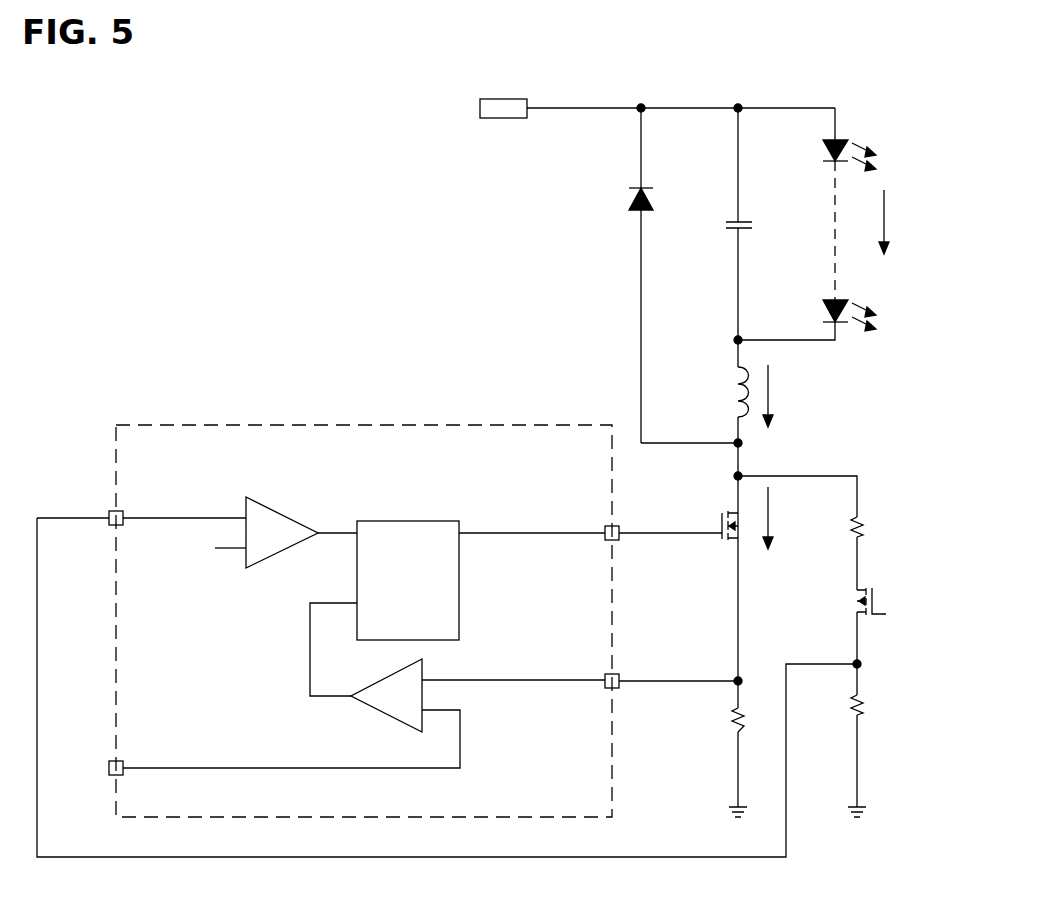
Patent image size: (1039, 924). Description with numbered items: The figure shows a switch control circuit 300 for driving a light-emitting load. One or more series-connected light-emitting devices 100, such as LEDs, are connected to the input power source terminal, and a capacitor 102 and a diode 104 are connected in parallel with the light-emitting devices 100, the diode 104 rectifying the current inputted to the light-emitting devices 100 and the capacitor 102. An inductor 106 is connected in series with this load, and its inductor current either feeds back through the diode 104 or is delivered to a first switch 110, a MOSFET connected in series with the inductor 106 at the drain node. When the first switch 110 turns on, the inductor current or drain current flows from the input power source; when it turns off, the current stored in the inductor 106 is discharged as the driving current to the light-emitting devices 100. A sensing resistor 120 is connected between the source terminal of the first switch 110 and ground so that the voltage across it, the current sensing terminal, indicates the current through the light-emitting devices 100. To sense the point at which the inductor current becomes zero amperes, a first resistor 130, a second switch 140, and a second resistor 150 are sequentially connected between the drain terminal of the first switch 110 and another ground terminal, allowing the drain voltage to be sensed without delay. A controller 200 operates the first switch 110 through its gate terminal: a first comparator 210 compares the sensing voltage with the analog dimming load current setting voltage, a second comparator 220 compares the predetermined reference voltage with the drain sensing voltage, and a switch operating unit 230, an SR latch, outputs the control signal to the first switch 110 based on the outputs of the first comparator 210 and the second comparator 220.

The switch control circuit 300 is at (258, 125).
The light-emitting device 100 is at (846, 141).
The capacitor 102 is at (752, 222).
The diode 104 is at (653, 188).
The inductor 106 is at (737, 392).
The first switch 110 is at (718, 543).
The sensing resistor 120 is at (733, 720).
The first resistor 130 is at (863, 527).
The second switch 140 is at (880, 598).
The second resistor 150 is at (863, 705).
The controller 200 is at (364, 425).
The first comparator 210 is at (392, 717).
The second comparator 220 is at (284, 512).
The switch operating unit 230 is at (402, 521).